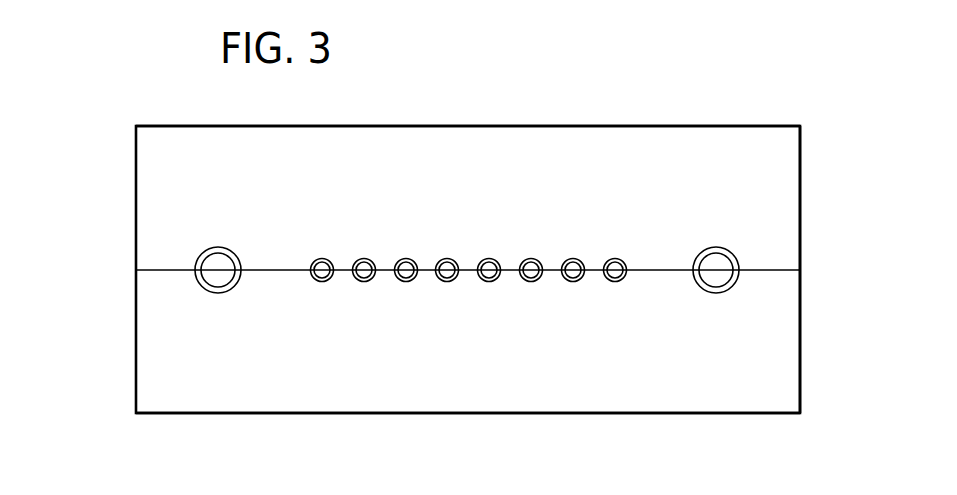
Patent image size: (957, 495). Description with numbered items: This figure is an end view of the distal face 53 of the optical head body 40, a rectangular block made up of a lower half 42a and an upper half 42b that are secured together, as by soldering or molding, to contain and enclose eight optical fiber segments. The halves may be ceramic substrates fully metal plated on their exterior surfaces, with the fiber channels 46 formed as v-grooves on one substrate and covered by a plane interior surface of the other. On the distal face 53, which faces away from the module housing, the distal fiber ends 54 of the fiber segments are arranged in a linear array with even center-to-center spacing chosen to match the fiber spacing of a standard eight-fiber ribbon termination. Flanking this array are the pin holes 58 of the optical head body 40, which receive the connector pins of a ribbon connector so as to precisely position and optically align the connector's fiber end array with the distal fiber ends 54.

The optical head body 40 is at (131, 206).
The lower half 42a is at (477, 400).
The upper half 42b is at (474, 140).
The distal face 53 is at (723, 163).
The pin holes 58 is at (218, 262).
The fiber channels 46 is at (321, 262).
The distal fiber ends 54 is at (321, 281).